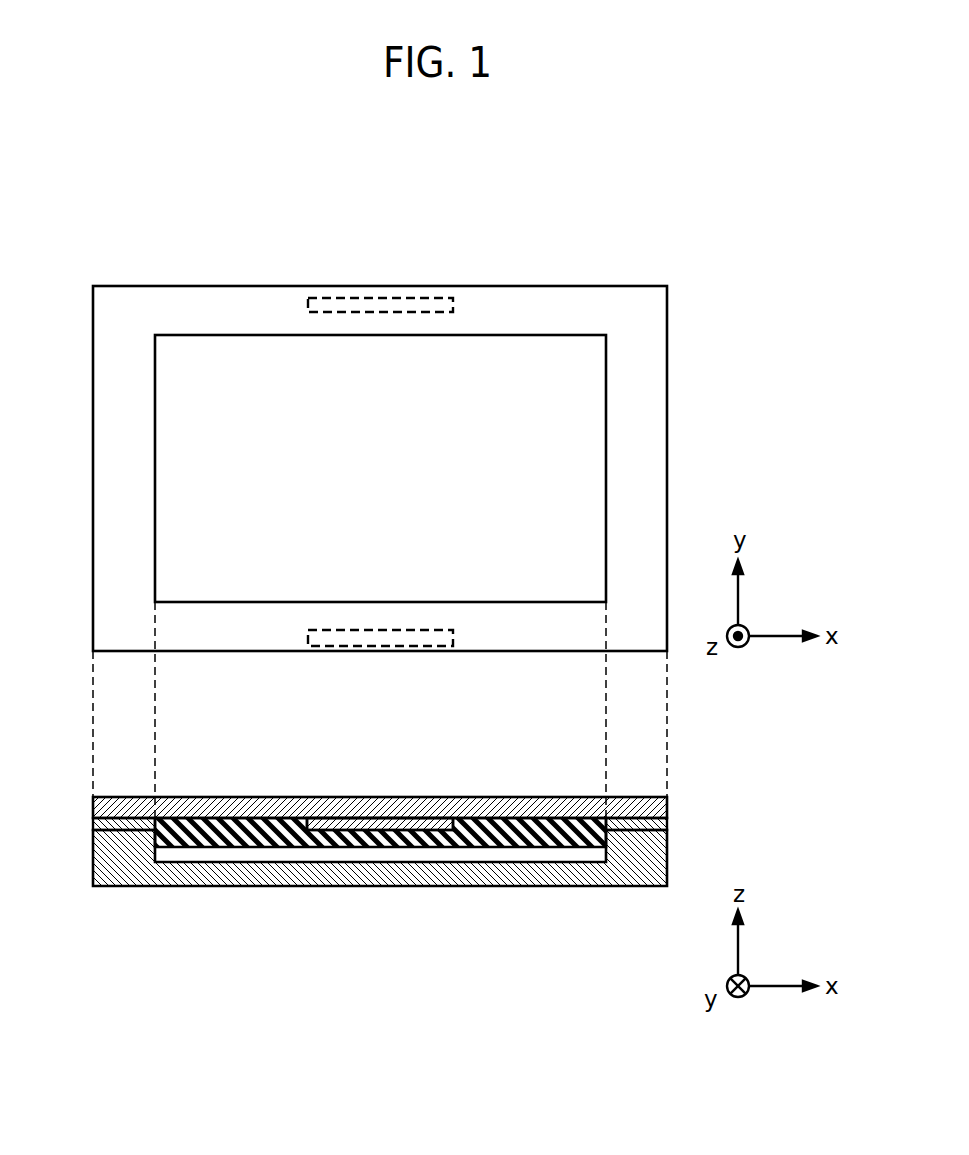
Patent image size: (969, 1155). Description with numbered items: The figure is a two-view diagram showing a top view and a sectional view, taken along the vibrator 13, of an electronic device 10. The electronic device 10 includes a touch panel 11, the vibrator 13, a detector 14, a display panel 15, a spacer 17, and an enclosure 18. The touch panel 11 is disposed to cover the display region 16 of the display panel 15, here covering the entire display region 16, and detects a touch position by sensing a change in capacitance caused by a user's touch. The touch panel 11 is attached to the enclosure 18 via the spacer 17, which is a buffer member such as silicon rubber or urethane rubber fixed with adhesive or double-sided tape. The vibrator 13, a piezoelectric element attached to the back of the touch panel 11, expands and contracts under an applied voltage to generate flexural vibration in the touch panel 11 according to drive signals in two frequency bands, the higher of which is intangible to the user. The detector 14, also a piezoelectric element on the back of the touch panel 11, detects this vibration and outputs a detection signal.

The electronic device 10 is at (709, 252).
The touch panel 11 is at (595, 302).
The vibrator 13 is at (355, 307).
The detector 14 is at (416, 635).
The display panel 15 is at (213, 830).
The display region 16 is at (606, 403).
The spacer 17 is at (667, 818).
The enclosure 18 is at (667, 863).